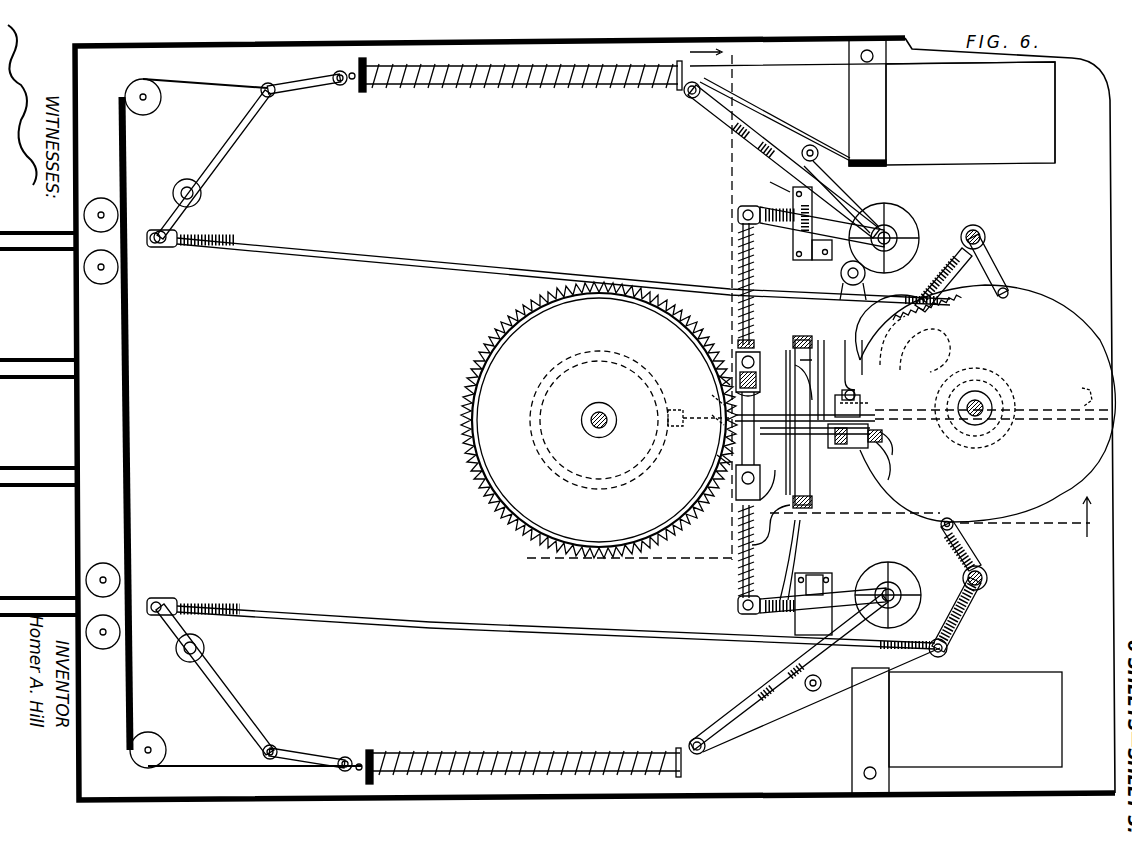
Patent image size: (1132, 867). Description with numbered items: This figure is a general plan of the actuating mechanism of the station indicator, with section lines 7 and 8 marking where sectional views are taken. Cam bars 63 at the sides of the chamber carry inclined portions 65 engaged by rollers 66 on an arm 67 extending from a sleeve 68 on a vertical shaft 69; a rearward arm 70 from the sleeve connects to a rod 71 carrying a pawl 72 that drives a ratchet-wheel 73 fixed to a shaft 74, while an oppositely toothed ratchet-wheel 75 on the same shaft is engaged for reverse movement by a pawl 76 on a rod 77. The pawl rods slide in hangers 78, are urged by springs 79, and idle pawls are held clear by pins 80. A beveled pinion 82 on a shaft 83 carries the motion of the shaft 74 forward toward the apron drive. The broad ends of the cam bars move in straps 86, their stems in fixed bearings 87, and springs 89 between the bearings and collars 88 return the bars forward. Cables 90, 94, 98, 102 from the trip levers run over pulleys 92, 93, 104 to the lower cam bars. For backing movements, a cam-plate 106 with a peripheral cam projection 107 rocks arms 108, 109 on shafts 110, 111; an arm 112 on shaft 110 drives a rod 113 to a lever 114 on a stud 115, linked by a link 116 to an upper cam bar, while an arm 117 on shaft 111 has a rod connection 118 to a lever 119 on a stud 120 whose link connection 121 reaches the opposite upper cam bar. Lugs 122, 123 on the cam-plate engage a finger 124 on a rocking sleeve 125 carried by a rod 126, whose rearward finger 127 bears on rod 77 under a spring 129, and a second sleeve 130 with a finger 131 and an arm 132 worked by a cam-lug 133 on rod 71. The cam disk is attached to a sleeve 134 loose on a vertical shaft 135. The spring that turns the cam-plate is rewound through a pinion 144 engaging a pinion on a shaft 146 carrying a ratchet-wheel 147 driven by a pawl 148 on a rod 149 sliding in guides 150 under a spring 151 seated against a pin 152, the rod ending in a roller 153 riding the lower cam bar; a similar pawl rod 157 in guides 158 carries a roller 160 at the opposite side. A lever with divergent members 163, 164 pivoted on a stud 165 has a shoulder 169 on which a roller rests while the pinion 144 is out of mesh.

The section line 7 is at (812, 533).
The section line 8 is at (715, 391).
The upper cam bar 63 is at (820, 411).
The cam-shaped or inclined portion 65 is at (775, 128).
The roller 66 is at (688, 100).
The arm 67 is at (738, 150).
The sleeve 68 is at (897, 238).
The vertical shaft 69 is at (890, 230).
The arm 70 is at (770, 207).
The rod 71 is at (738, 240).
The pawl 72 is at (757, 390).
The ratchet-wheel 73 is at (465, 488).
The shaft 74 is at (597, 428).
The ratchet-wheel 75 is at (618, 810).
The pawl 76 is at (760, 428).
The rod 77 is at (748, 505).
The guide-plate or hanger 78 is at (781, 560).
The spring 79 is at (756, 565).
The pin 80 is at (716, 381).
The beveled pinion 82 is at (680, 430).
The shaft 83 is at (715, 405).
The strap 86 is at (886, 118).
The fixed bearing 87 is at (360, 92).
The collar 88 is at (676, 92).
The spring 89 is at (526, 88).
The rope or cable 90 is at (40, 596).
The pulley 92 is at (114, 572).
The pulley 93 is at (161, 101).
The rope or cable 94 is at (15, 489).
The rope or cable 98 is at (22, 358).
The cable 102 is at (26, 254).
The pulley 104 is at (110, 275).
The cam-plate or disk 106 is at (1020, 366).
The peripheral cam projection 107 is at (1088, 314).
The arm 108 is at (1000, 265).
The arm 109 is at (965, 548).
The shaft 110 is at (985, 233).
The shaft 111 is at (987, 578).
The arm 112 is at (930, 283).
The rod 113 is at (566, 272).
The lever 114 is at (222, 166).
The stud 115 is at (201, 193).
The link 116 is at (288, 90).
The arm 117 is at (975, 610).
The rod connection 118 is at (632, 650).
The lever 119 is at (240, 688).
The stud 120 is at (185, 655).
The link connection 121 is at (318, 752).
The lug 122 is at (898, 461).
The lug 123 is at (1086, 385).
The finger 124 is at (901, 443).
The rocking sleeve 125 is at (810, 490).
The rod 126 is at (802, 336).
The finger 127 is at (775, 520).
The spring 129 is at (840, 448).
The sleeve 130 is at (812, 380).
The finger 131 is at (856, 398).
The arm 132 is at (768, 372).
The cam-lug 133 is at (740, 344).
The sleeve 134 is at (992, 400).
The vertical shaft 135 is at (975, 400).
The pinion 144 is at (835, 405).
The shaft 146 is at (868, 445).
The ratchet-wheel 147 is at (770, 483).
The spring yielding pawl 148 is at (786, 436).
The rod 149 is at (782, 418).
The guide 150 is at (830, 205).
The spring 151 is at (845, 200).
The pin 152 is at (769, 177).
The roller 153 is at (815, 145).
The rod 157 is at (810, 573).
The guide 158 is at (857, 595).
The wheel or roller 160 is at (820, 690).
The lever member 163 is at (920, 333).
The lever member 164 is at (824, 355).
The stud 165 is at (839, 280).
The shoulder 169 is at (864, 360).